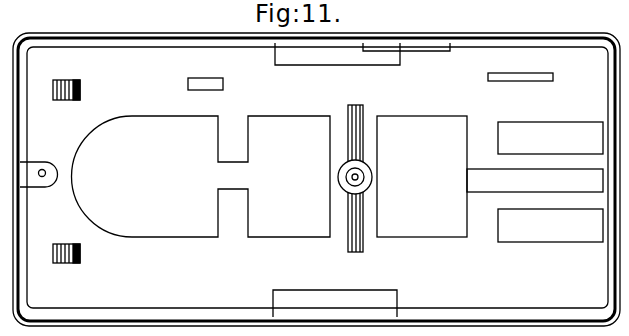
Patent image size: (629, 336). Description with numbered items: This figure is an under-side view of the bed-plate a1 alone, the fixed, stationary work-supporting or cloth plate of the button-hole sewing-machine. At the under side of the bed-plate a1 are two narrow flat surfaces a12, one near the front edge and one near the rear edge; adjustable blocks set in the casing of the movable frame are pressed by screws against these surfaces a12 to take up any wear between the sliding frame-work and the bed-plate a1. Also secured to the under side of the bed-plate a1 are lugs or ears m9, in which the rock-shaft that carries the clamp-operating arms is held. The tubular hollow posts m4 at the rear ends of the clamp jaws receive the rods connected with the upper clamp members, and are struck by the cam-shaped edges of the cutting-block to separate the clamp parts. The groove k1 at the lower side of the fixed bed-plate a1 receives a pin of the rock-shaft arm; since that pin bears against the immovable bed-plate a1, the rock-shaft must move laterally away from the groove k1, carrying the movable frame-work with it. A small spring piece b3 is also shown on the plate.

The bed-plate a1 is at (200, 199).
The narrow flat surfaces a12 is at (361, 180).
The tubular hollow posts m4 is at (82, 90).
The lugs or ears m9 is at (70, 265).
The spring contact b3 is at (187, 85).
The groove k1 is at (535, 182).